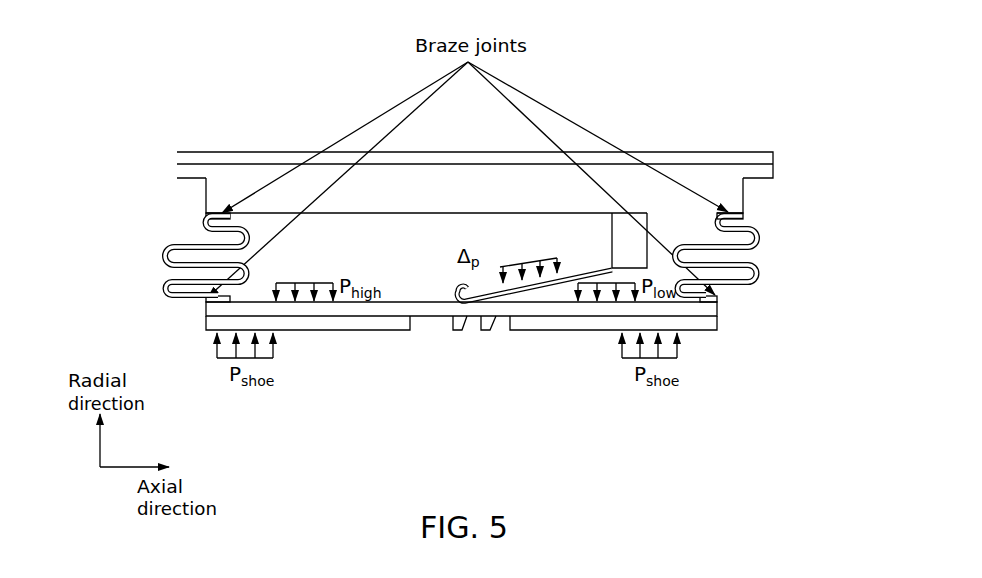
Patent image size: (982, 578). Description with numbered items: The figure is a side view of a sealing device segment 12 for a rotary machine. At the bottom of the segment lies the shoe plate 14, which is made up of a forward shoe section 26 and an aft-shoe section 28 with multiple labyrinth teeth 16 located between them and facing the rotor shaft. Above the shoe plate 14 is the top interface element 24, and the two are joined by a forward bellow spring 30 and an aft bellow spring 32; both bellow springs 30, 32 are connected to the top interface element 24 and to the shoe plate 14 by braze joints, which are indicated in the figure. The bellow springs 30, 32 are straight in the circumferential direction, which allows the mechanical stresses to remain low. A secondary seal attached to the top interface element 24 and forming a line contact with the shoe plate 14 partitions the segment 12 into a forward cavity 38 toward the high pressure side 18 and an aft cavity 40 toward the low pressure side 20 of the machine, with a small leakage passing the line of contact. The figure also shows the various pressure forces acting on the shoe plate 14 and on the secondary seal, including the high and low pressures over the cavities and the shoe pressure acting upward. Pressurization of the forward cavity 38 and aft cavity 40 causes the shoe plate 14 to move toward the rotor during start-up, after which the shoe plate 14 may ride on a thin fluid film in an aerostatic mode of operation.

The sealing device segment 12 is at (707, 50).
The shoe plate 14 is at (447, 342).
The labyrinth teeth 16 is at (466, 328).
The high pressure side 18 is at (160, 255).
The low pressure side 20 is at (759, 259).
The top interface element 24 is at (211, 147).
The forward shoe section 26 is at (347, 333).
The aft-shoe section 28 is at (702, 331).
The forward bellow spring 30 is at (160, 250).
The aft bellow spring 32 is at (759, 233).
The forward cavity 38 is at (377, 255).
The aft cavity 40 is at (692, 230).